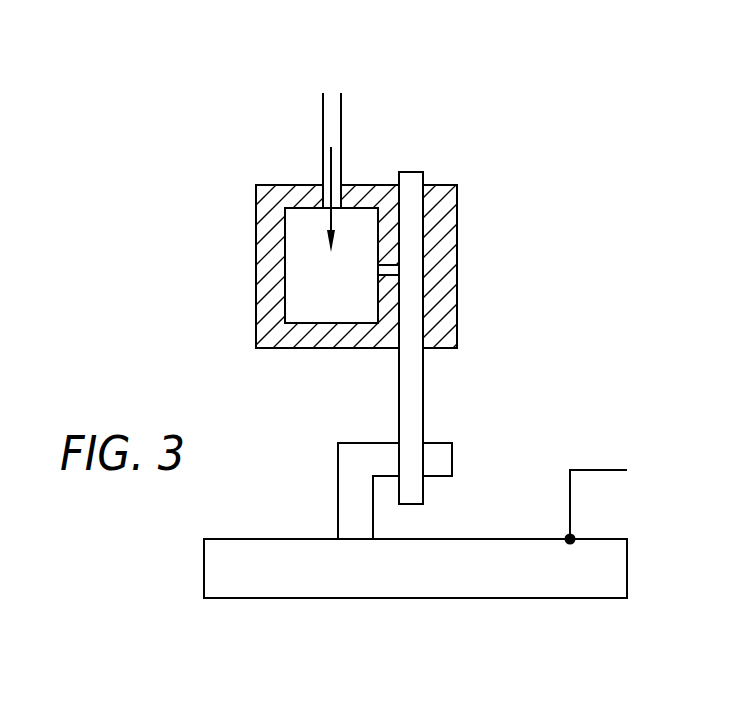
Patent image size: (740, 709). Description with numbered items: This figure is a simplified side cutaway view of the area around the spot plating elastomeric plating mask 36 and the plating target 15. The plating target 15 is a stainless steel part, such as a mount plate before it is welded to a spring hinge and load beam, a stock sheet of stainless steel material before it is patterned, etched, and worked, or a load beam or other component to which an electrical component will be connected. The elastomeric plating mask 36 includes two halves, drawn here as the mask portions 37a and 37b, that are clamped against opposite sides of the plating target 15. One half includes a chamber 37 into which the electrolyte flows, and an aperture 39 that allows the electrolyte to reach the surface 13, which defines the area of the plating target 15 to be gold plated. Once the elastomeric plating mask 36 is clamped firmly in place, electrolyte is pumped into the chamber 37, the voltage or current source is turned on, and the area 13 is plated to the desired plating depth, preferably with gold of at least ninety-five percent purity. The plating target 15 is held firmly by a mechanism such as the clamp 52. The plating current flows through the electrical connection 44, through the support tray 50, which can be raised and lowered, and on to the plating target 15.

The elastomeric plating mask 36 is at (228, 168).
The surface 13 is at (398, 264).
The plating target 15 is at (410, 176).
The chamber 37 is at (312, 264).
The first body portion 37a is at (256, 266).
The second body portion 37b is at (457, 222).
The aperture 39 is at (367, 270).
The clamp 52 is at (371, 443).
The electrical connection 44 is at (590, 472).
The support tray 50 is at (512, 598).